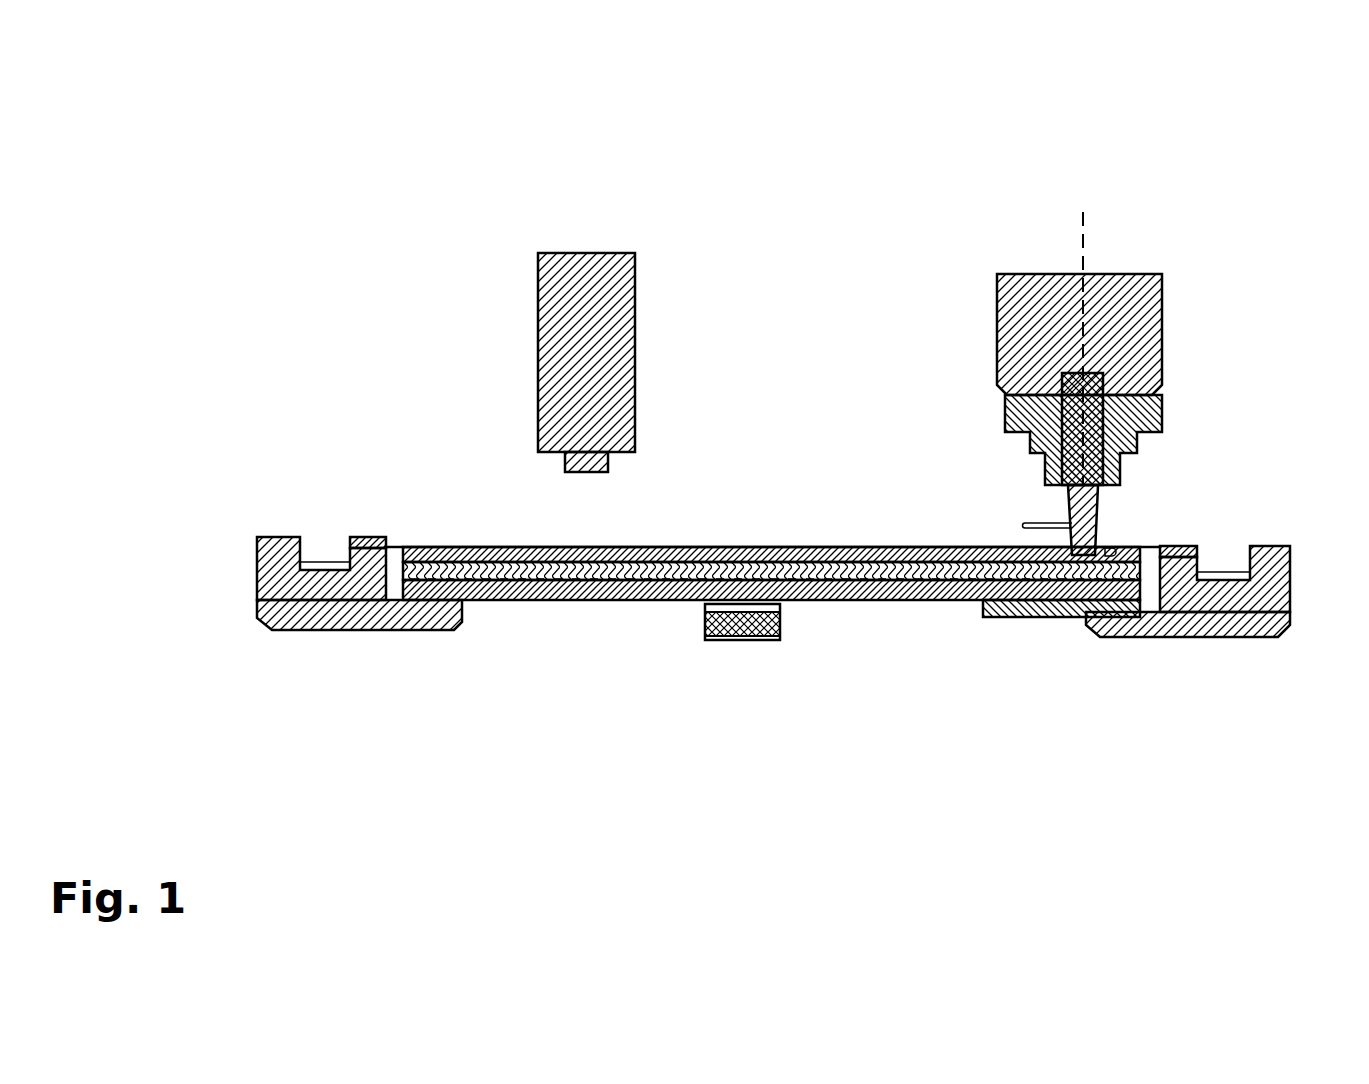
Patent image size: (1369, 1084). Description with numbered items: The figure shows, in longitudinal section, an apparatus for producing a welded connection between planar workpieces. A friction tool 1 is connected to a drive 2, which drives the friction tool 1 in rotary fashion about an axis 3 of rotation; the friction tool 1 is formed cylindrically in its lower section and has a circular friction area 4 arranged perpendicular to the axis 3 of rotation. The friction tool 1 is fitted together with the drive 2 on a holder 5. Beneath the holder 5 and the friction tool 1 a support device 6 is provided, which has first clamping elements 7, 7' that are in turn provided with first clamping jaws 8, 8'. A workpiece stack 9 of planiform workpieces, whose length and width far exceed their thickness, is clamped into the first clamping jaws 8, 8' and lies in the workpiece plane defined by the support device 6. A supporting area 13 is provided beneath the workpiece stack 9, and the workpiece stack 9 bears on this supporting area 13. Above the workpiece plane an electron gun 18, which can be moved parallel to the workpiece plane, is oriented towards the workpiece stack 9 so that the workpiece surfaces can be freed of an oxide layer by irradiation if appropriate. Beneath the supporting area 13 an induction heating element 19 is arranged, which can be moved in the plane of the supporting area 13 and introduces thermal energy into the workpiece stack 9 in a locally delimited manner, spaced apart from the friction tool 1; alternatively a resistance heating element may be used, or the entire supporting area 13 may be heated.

The friction tool 1 is at (1095, 535).
The drive 2 is at (1107, 423).
The axis of rotation 3 is at (1088, 236).
The friction area 4 is at (1075, 582).
The holder 5 is at (1120, 320).
The support device 6 is at (1253, 661).
The first clamping element 7 is at (296, 559).
The first clamping element 7' is at (1263, 595).
The first clamping jaw 8 is at (258, 444).
The first clamping jaw 8' is at (1263, 501).
The workpiece stack 9 is at (817, 548).
The supporting area 13 is at (700, 578).
The electron gun 18 is at (610, 300).
The induction heating element 19 is at (1012, 615).